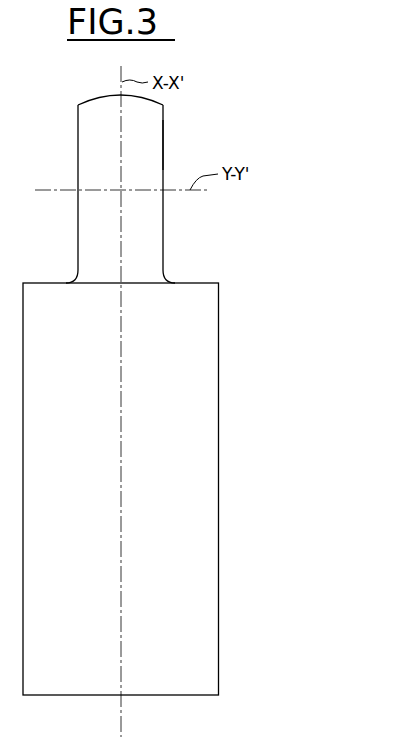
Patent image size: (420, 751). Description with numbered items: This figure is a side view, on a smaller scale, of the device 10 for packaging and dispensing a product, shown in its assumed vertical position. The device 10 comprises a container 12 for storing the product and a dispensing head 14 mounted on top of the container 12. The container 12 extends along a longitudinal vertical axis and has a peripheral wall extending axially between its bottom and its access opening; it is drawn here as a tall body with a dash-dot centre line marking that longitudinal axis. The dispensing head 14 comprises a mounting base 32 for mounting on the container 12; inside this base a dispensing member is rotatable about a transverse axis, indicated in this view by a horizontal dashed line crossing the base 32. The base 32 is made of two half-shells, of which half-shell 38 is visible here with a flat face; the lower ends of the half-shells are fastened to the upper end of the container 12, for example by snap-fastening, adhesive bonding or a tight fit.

The device for packaging and dispensing a product 10 is at (205, 97).
The container 12 is at (219, 488).
The dispensing head 14 is at (73, 108).
The mounting base 32 is at (164, 243).
The half-shell 38 is at (157, 142).